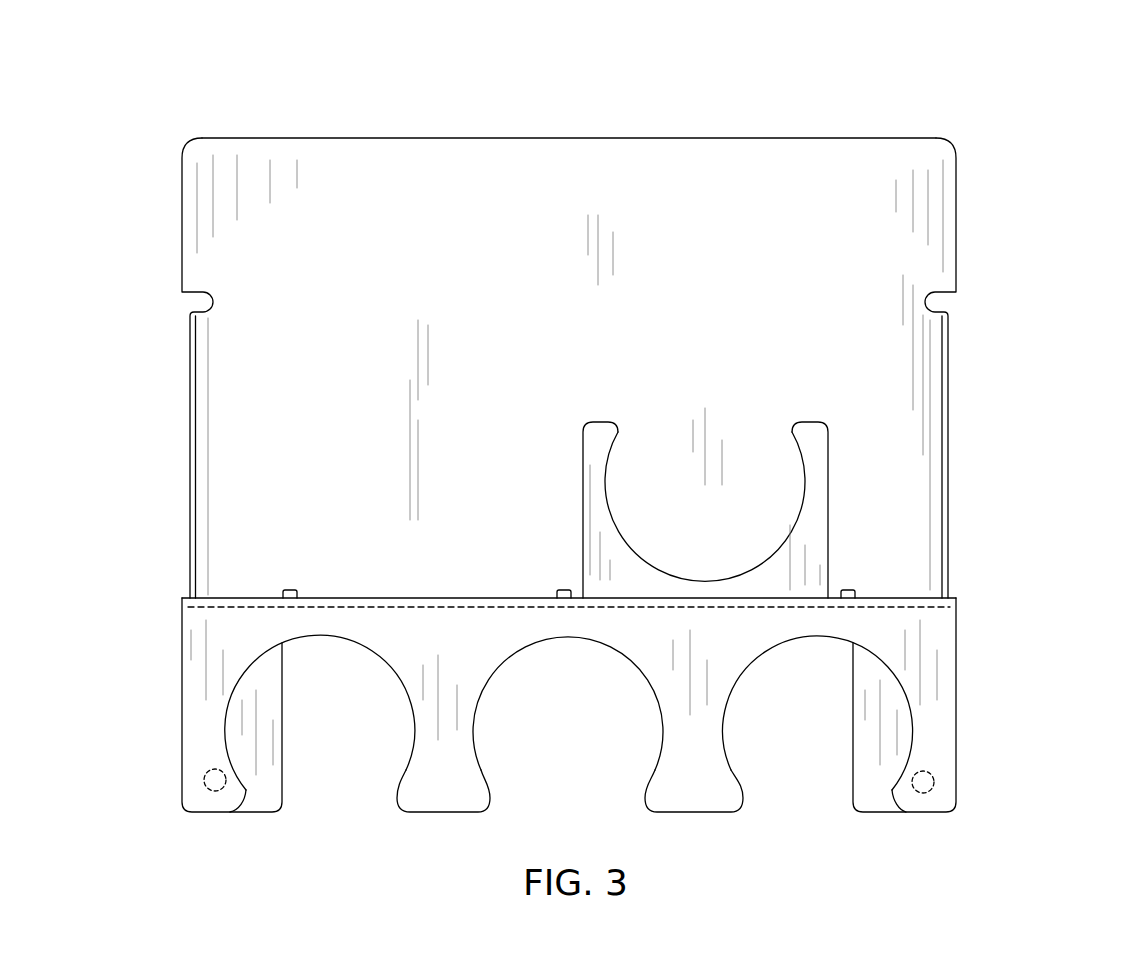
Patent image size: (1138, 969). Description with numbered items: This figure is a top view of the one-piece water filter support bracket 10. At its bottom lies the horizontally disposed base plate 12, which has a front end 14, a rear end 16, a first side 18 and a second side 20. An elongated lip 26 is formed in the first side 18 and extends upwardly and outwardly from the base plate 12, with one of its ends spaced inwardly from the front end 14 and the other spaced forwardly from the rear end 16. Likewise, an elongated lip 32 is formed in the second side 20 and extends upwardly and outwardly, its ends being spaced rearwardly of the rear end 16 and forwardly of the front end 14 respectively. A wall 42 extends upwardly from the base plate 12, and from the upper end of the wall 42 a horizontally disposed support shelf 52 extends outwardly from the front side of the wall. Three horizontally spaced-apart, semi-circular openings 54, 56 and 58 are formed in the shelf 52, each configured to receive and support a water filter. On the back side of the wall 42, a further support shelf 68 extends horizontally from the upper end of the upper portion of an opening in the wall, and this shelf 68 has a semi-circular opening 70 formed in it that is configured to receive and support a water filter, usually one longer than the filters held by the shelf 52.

The bracket 10 is at (923, 95).
The base plate 12 is at (776, 168).
The front end 14 is at (876, 822).
The rear end 16 is at (468, 137).
The first side 18 is at (968, 509).
The second side 20 is at (182, 491).
The elongated lip 26 is at (948, 373).
The elongated lip 32 is at (198, 378).
The wall 42 is at (368, 597).
The support shelf 52 is at (958, 675).
The semi-circular opening 54 is at (735, 770).
The semi-circular opening 56 is at (657, 770).
The semi-circular opening 58 is at (408, 767).
The support shelf 68 is at (830, 468).
The semi-circular opening 70 is at (607, 487).